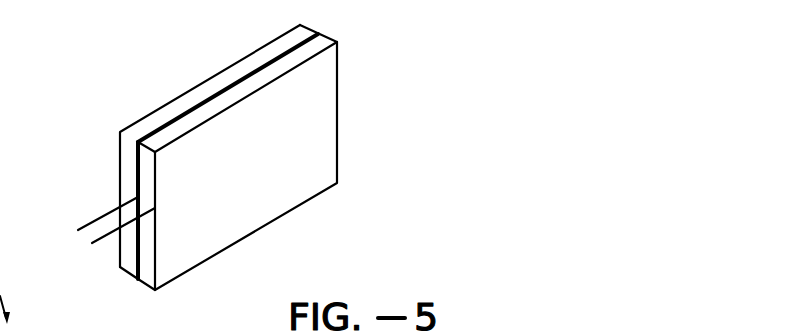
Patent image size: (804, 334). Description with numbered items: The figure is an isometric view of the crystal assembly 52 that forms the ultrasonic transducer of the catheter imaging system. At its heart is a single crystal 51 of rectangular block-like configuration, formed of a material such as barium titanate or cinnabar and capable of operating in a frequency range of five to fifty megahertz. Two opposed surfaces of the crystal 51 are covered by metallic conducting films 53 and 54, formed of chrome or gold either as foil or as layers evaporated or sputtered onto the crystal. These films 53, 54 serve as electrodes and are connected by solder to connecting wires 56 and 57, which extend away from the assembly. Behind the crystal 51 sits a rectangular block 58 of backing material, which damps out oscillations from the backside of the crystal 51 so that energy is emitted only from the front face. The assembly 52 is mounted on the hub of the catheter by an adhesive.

The crystal 51 is at (303, 53).
The assembly 52 is at (360, 213).
The metallic conducting film 53 is at (323, 100).
The metallic conducting film 54 is at (318, 37).
The connecting wire 56 is at (100, 244).
The connecting wire 57 is at (97, 217).
The rectangular block 58 is at (174, 106).